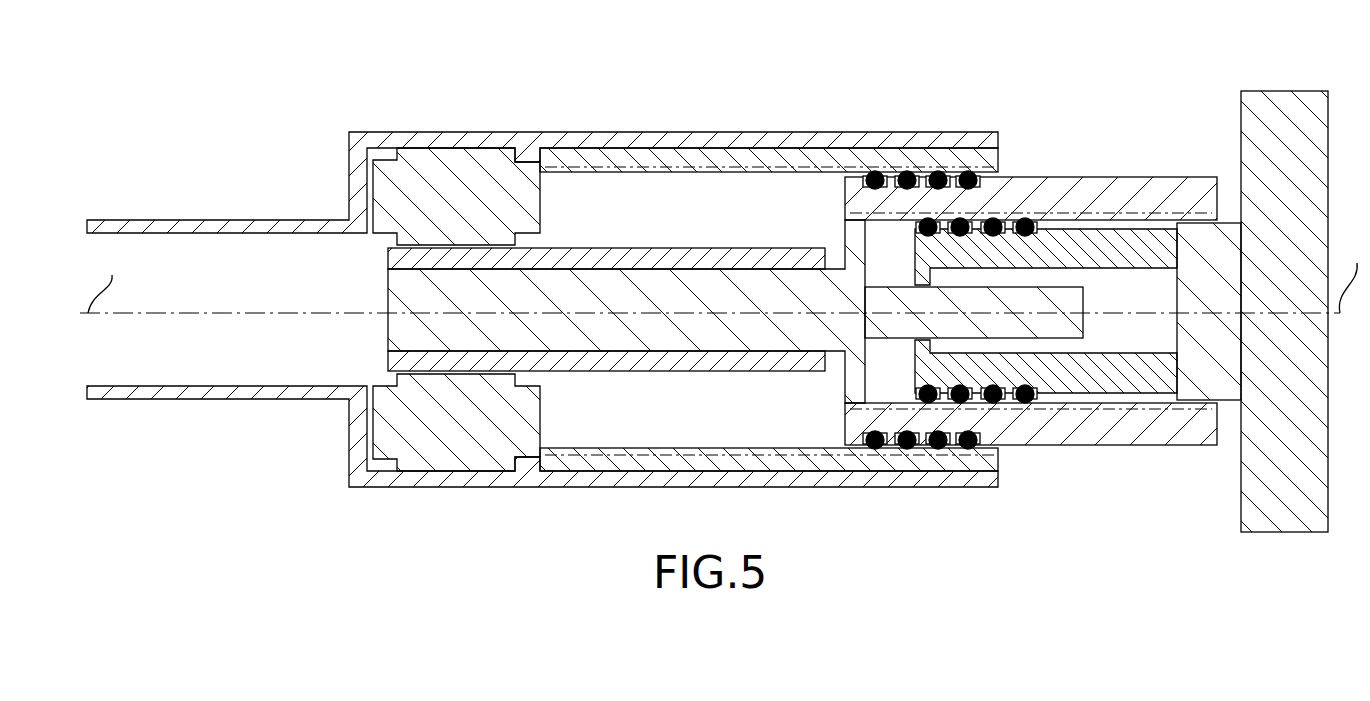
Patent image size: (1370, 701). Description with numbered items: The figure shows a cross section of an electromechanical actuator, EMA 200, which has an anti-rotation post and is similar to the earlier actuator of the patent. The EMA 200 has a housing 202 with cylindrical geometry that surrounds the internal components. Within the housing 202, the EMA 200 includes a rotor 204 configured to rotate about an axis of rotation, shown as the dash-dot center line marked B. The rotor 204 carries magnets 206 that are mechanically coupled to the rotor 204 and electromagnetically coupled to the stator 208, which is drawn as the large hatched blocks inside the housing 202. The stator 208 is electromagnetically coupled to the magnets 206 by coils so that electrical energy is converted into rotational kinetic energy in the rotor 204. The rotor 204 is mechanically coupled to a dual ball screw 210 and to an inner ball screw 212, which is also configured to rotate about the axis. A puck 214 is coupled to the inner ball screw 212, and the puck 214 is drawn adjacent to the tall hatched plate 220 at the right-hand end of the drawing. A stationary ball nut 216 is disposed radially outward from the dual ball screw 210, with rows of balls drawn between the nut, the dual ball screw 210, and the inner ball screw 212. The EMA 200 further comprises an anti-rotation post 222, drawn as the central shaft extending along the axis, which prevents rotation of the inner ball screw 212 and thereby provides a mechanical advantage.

The EMA 200 is at (1152, 77).
The housing 202 is at (349, 421).
The rotor 204 is at (600, 342).
The magnets 206 is at (598, 254).
The stator 208 is at (373, 182).
The dual ball screw 210 is at (1170, 193).
The inner ball screw 212 is at (1112, 250).
The puck 214 is at (1200, 390).
The stationary ball nut 216 is at (1002, 160).
The mounting plate 220 is at (1275, 513).
The anti-rotation post 222 is at (1083, 297).